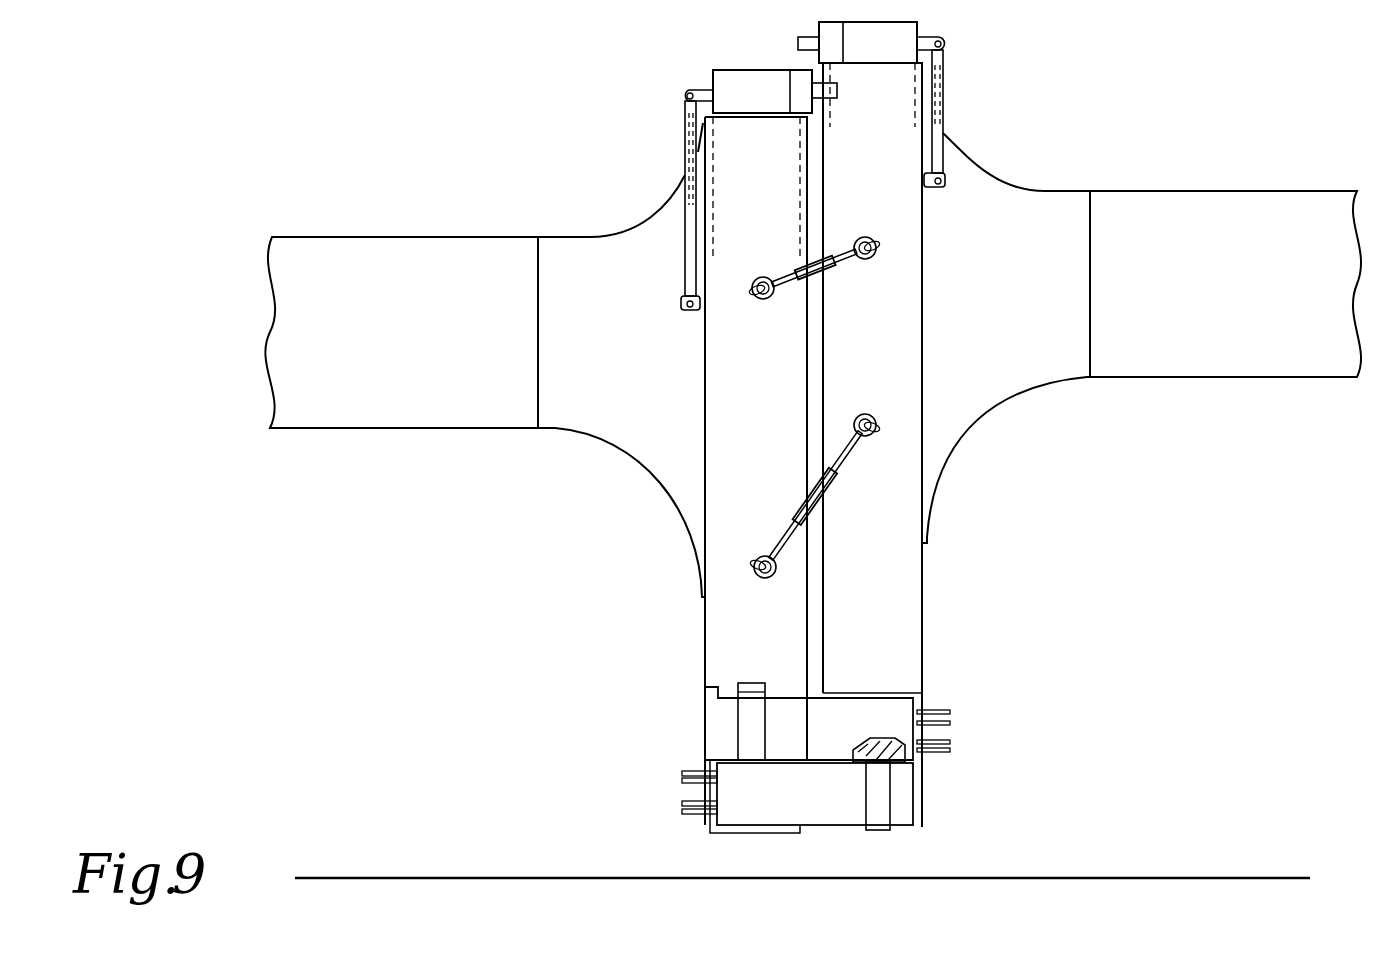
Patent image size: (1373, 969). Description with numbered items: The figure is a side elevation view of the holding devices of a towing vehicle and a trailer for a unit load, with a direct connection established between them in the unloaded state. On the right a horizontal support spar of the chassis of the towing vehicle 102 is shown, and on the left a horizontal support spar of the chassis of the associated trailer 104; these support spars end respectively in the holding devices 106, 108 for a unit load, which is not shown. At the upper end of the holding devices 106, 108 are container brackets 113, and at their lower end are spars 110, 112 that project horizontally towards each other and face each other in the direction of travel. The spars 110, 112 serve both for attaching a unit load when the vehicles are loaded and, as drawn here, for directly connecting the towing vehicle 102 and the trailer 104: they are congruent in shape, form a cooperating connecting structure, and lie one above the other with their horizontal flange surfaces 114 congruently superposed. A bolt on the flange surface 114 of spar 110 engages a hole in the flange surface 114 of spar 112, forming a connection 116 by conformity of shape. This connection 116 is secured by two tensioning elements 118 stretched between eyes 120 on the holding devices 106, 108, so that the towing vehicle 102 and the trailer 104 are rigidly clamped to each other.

The towing vehicle 102 is at (1256, 296).
The trailer 104 is at (426, 349).
The holding device 106 is at (901, 336).
The holding device 108 is at (781, 361).
The spar 110 is at (786, 806).
The spar 112 is at (863, 736).
The container bracket 113 is at (798, 43).
The flange surface 114 is at (826, 763).
The bolt and hole connection 116 is at (877, 757).
The tensioning element 118 is at (815, 262).
The eye 120 is at (757, 288).